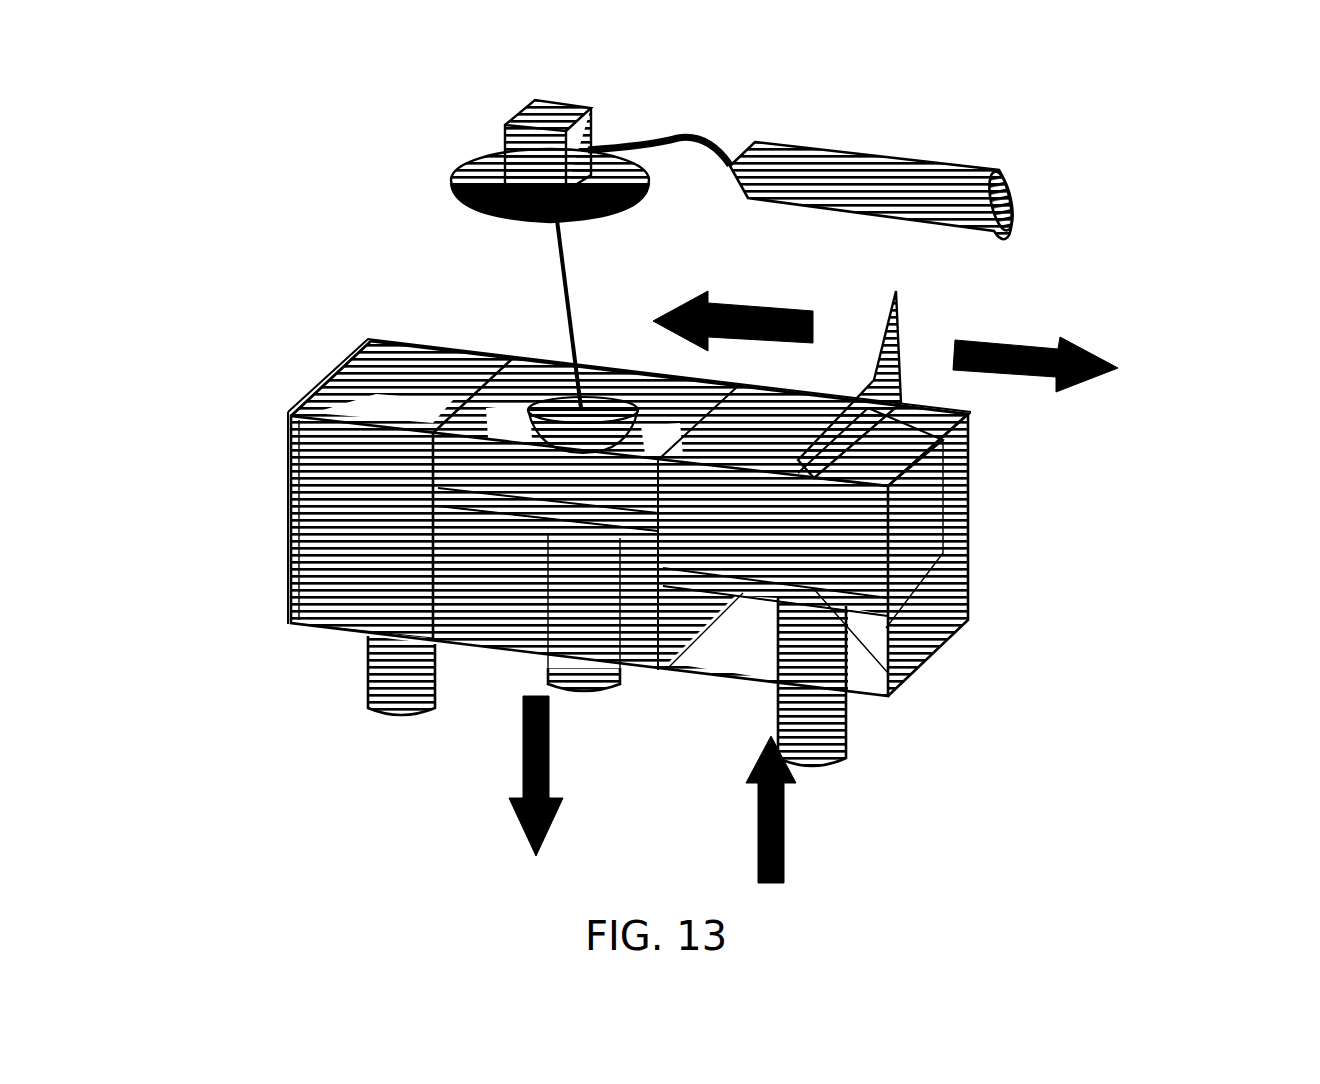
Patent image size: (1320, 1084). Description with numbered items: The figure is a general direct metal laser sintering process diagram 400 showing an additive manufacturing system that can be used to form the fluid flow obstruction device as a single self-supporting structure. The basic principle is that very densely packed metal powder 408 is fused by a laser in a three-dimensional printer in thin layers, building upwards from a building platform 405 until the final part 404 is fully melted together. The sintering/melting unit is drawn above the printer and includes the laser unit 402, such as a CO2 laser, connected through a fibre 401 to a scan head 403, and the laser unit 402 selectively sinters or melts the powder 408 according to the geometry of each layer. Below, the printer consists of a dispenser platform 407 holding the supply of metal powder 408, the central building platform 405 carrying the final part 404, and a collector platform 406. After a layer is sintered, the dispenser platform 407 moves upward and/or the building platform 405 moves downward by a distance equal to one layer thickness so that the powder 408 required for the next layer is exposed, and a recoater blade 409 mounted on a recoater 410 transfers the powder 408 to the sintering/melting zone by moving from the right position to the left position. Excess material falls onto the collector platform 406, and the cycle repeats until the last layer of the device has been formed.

The DMLS process diagram 400 is at (1115, 179).
The fibre 401 is at (678, 138).
The laser unit 402 is at (908, 185).
The scan head 403 is at (497, 130).
The final part 404 is at (545, 405).
The building platform 405 is at (527, 505).
The collector platform 406 is at (285, 587).
The dispenser platform 407 is at (876, 685).
The metal powder 408 is at (938, 538).
The recoater blade 409 is at (862, 418).
The recoater 410 is at (902, 381).